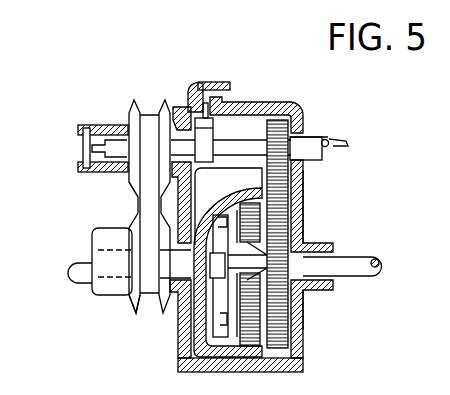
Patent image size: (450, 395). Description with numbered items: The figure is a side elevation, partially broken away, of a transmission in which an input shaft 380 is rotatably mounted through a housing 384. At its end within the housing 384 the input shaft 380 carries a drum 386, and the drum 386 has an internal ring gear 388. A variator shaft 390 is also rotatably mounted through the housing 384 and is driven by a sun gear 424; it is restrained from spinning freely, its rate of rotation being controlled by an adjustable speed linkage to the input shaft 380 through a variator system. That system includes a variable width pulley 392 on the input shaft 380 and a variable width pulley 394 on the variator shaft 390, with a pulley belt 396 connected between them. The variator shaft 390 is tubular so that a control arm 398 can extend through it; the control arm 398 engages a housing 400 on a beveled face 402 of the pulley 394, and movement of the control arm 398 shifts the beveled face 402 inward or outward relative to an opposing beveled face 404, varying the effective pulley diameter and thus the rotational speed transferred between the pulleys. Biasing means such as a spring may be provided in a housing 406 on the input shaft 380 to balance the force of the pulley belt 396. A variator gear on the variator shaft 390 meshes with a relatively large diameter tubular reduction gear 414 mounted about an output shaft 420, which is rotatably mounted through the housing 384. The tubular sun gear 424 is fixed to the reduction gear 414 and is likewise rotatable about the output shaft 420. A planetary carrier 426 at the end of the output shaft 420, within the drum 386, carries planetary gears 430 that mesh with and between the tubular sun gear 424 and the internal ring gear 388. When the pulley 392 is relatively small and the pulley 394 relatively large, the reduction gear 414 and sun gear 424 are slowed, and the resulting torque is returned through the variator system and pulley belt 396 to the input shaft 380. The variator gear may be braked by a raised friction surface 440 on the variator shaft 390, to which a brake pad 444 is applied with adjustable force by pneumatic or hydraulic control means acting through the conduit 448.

The input shaft 380 is at (78, 273).
The housing 384 is at (302, 125).
The drum 386 is at (205, 313).
The internal ring gear 388 is at (297, 362).
The variator shaft 390 is at (312, 150).
The variable width pulley 392 is at (128, 303).
The variable width pulley 394 is at (128, 116).
The pulley belt 396 is at (142, 113).
The control arm 398 is at (338, 144).
The housing 400 is at (122, 172).
The beveled face 402 is at (130, 183).
The opposing beveled face 404 is at (166, 115).
The housing 406 is at (106, 243).
The tubular reduction gear 414 is at (292, 217).
The output shaft 420 is at (378, 264).
The tubular sun gear 424 is at (302, 287).
The planetary carrier 426 is at (223, 332).
The planetary gears 430 is at (298, 323).
The raised friction surface 440 is at (278, 128).
The brake pad 444 is at (206, 105).
The conduit 448 is at (228, 85).